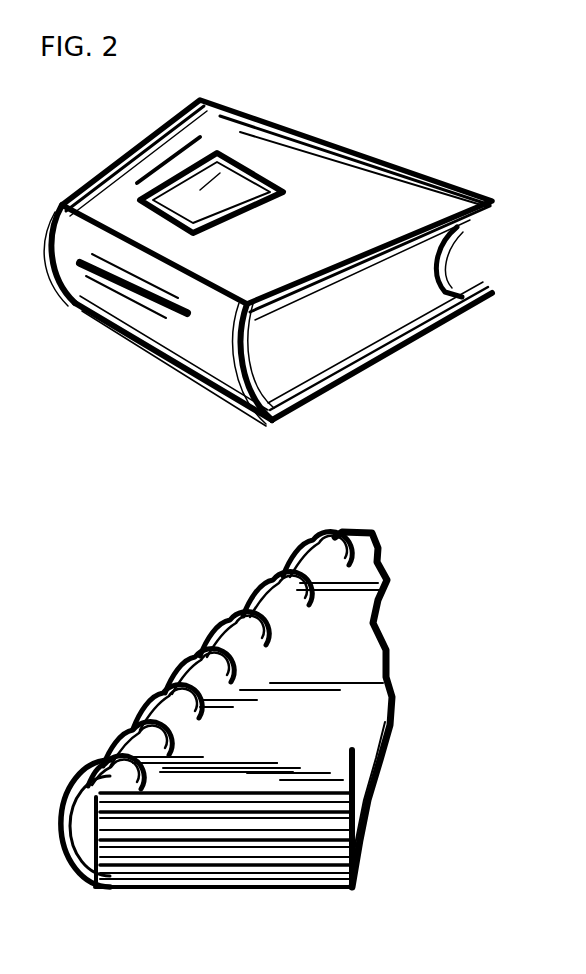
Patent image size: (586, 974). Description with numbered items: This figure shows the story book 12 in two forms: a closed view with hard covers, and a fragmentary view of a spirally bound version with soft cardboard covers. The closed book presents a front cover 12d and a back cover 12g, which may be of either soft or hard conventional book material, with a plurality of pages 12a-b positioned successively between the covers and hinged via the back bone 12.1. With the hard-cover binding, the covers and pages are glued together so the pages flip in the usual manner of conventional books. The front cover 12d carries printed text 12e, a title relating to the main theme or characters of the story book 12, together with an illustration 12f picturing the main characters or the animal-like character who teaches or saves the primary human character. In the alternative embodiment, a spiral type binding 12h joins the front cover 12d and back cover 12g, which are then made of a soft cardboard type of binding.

The story book 12 is at (118, 343).
The back bone 12.1 is at (137, 360).
The pages 12a-b is at (383, 307).
The front cover 12d is at (230, 103).
The text 12e is at (120, 160).
The illustration 12f is at (235, 167).
The back cover 12g is at (333, 393).
The spiral type binding 12h is at (90, 755).